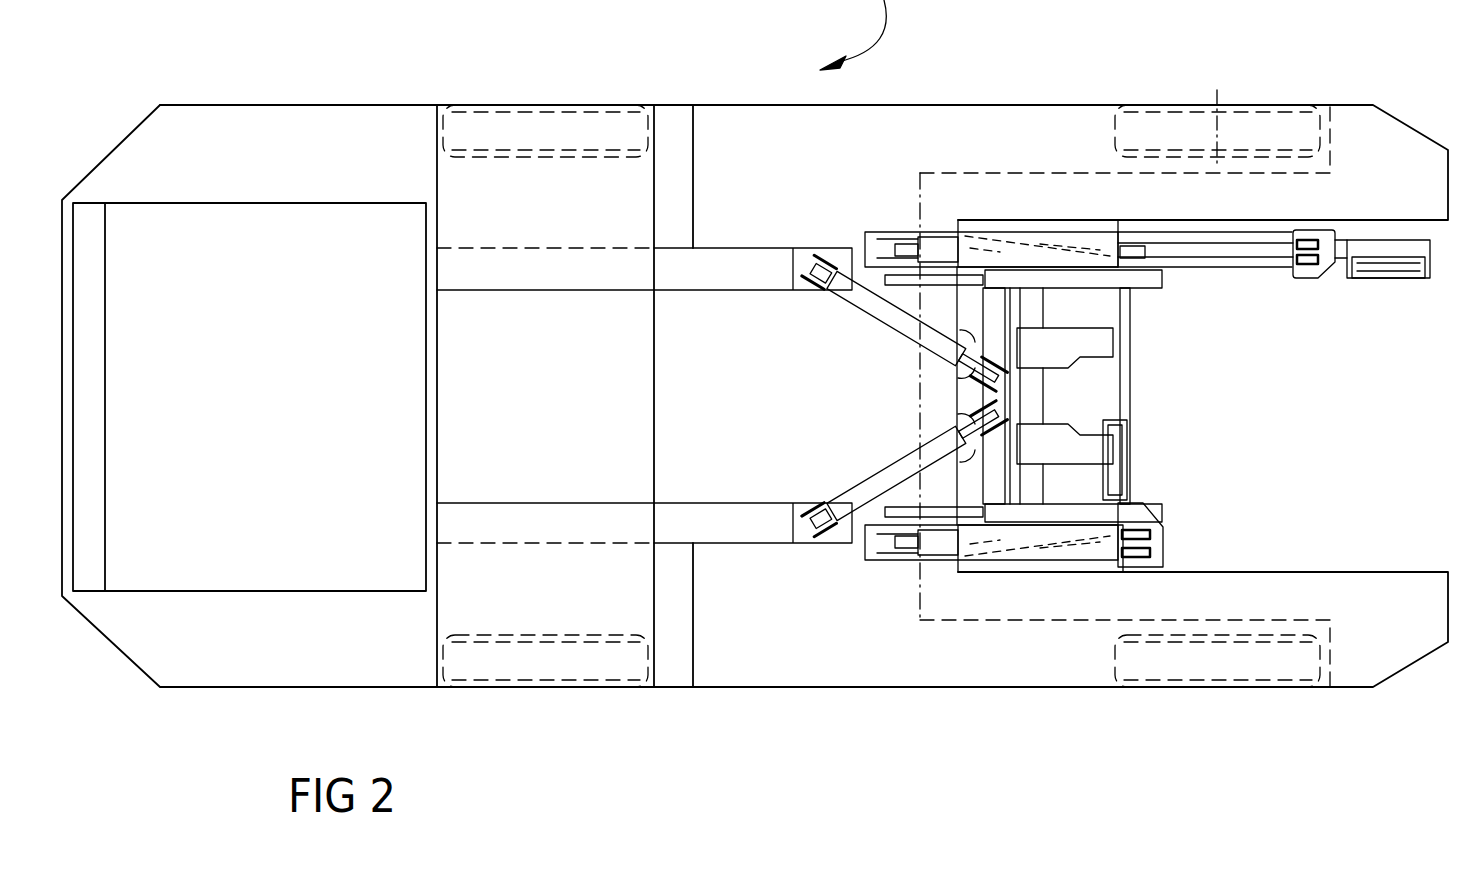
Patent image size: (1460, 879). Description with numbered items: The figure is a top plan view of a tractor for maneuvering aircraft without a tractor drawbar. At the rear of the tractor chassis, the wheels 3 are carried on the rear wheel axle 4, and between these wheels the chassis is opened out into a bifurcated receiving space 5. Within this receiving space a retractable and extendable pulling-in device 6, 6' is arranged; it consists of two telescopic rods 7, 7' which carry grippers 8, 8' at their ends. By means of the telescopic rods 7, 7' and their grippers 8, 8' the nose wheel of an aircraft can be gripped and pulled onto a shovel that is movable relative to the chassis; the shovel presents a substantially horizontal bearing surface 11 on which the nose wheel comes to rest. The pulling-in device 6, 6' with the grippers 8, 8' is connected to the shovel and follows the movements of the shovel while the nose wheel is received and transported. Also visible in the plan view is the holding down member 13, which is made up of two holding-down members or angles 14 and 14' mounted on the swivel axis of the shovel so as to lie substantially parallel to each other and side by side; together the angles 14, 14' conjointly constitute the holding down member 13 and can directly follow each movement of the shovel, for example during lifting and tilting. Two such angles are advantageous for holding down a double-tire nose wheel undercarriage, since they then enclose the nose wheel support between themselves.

The wheels 3 is at (1283, 108).
The rear wheel axle 4 is at (1220, 120).
The bifurcated receiving space 5 is at (1340, 425).
The pulling-in device 6 is at (1199, 520).
The pulling-in device 6' is at (1360, 291).
The telescopic rod 7 is at (994, 630).
The telescopic rod 7' is at (1079, 165).
The gripper 8 is at (1092, 579).
The gripper 8' is at (1388, 175).
The bearing surface 11 is at (1102, 308).
The holding down member 13 is at (1050, 350).
The holding-down angle 14 is at (915, 569).
The holding-down angle 14' is at (931, 228).